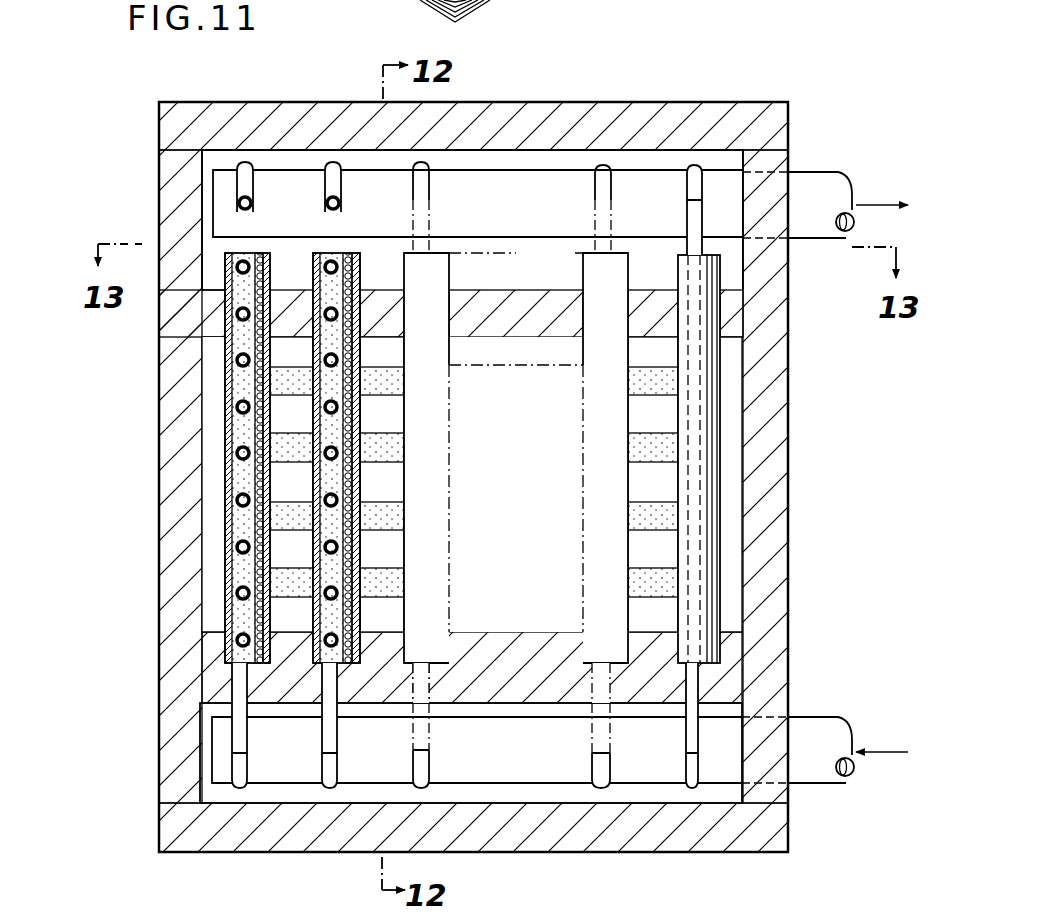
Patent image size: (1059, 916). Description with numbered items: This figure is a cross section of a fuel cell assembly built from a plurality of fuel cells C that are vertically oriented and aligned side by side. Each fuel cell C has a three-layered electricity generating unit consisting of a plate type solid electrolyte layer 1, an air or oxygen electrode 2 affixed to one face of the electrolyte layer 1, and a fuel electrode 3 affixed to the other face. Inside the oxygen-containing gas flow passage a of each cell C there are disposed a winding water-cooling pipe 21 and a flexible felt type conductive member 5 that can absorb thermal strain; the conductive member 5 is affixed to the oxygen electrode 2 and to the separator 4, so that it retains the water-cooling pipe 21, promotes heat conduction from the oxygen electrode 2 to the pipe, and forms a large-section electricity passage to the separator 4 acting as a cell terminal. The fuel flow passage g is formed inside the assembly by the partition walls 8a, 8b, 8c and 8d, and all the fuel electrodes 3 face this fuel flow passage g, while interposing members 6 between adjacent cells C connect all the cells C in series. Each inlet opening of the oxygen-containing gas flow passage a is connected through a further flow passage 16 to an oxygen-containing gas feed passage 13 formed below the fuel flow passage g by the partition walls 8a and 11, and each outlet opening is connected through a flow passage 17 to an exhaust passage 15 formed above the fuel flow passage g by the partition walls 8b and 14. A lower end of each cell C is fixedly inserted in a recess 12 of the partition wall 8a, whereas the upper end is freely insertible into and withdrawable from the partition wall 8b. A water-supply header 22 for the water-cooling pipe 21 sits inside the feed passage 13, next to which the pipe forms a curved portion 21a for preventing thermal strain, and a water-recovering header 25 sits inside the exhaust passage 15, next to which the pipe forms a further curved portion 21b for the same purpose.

The solid electrolyte layer 1 is at (262, 253).
The air electrode 2 is at (258, 253).
The fuel electrode 3 is at (270, 265).
The separator 4 is at (232, 357).
The conductive member 5 is at (238, 613).
The interposing members 6 is at (400, 442).
The partition wall 8a is at (527, 632).
The partition wall 8b is at (512, 290).
The partition wall 8c is at (160, 476).
The partition wall 8d is at (788, 478).
The partition wall 11 is at (318, 852).
The recess 12 is at (228, 650).
The oxygen-containing gas feed passage 13 is at (488, 792).
The partition wall 14 is at (305, 100).
The exhaust passage 15 is at (566, 162).
The flow passage 16 is at (318, 692).
The flow passage 17 is at (202, 420).
The water-cooling pipe 21 is at (245, 520).
The curved portion 21a is at (240, 770).
The curved portion 21b is at (240, 183).
The water-supply header 22 is at (553, 770).
The water-recovering header 25 is at (505, 170).
The fuel cell C is at (405, 250).
The oxygen-containing gas flow passage a is at (337, 562).
The fuel flow passage g is at (516, 442).